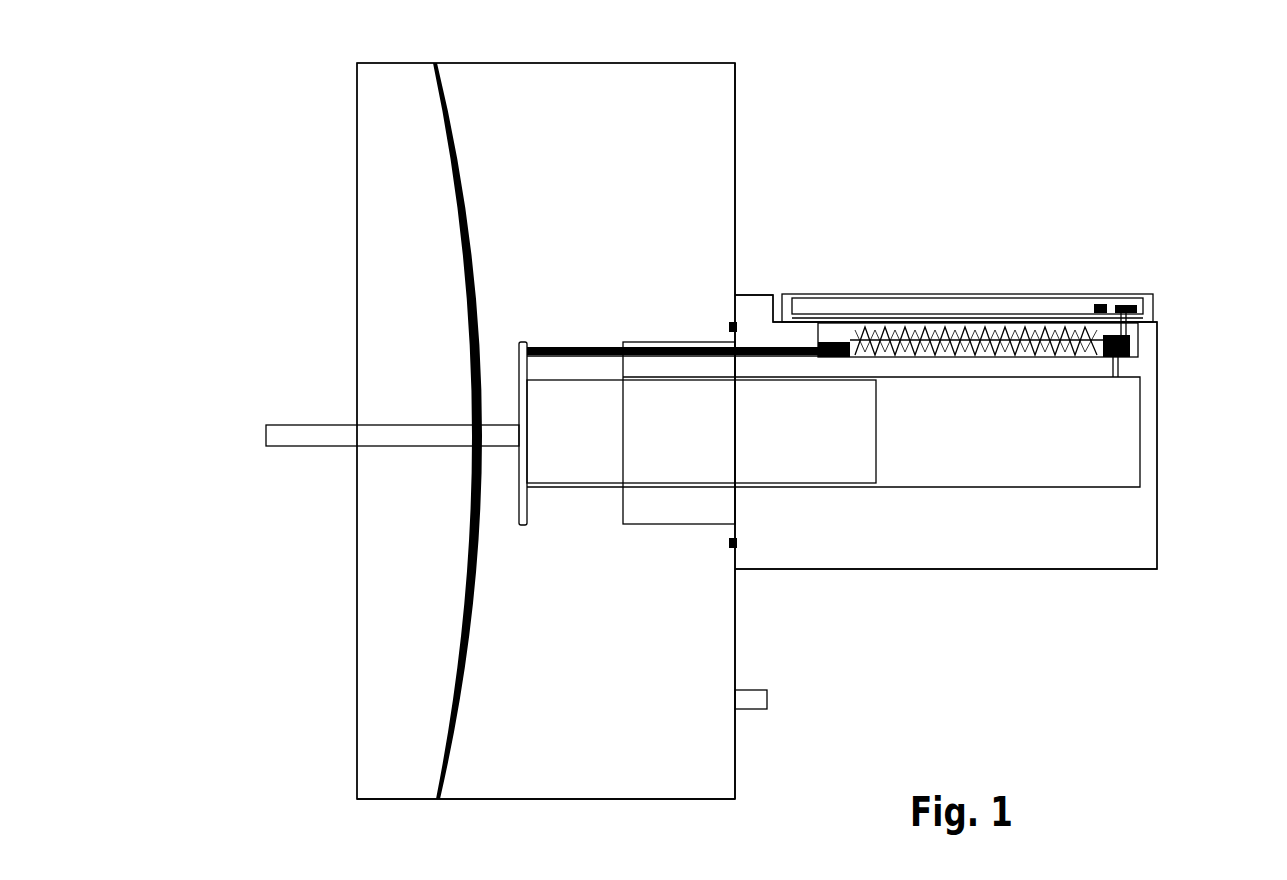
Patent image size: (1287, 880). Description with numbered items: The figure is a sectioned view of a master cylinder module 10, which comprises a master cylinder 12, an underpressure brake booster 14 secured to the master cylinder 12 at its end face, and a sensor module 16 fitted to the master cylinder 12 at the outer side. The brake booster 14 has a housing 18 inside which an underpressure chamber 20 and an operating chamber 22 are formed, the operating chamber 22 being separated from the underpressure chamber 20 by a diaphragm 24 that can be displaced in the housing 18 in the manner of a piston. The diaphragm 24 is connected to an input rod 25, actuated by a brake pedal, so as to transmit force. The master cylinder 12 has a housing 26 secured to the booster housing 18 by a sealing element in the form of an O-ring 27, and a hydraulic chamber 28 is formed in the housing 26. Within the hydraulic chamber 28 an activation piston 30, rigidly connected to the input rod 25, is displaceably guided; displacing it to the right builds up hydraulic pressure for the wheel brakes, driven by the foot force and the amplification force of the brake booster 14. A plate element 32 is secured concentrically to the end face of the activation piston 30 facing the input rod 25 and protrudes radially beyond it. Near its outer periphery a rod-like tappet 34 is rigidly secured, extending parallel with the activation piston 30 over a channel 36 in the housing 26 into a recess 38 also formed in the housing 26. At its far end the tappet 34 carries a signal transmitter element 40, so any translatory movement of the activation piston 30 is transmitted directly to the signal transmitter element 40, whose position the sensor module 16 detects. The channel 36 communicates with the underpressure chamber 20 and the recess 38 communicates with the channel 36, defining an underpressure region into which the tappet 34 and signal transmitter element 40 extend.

The master cylinder module 10 is at (283, 703).
The master cylinder 12 is at (1172, 604).
The underpressure brake booster 14 is at (312, 224).
The sensor module 16 is at (1067, 223).
The housing 18 is at (622, 795).
The underpressure chamber 20 is at (717, 755).
The operating chamber 22 is at (392, 590).
The diaphragm 24 is at (470, 242).
The input rod 25 is at (313, 437).
The housing 26 is at (913, 550).
The O-ring 27 is at (736, 328).
The hydraulic chamber 28 is at (1122, 413).
The activation piston 30 is at (847, 467).
The plate element 32 is at (533, 527).
The tappet 34 is at (583, 347).
The channel 36 is at (800, 345).
The recess 38 is at (952, 325).
The signal transmitter element 40 is at (837, 350).